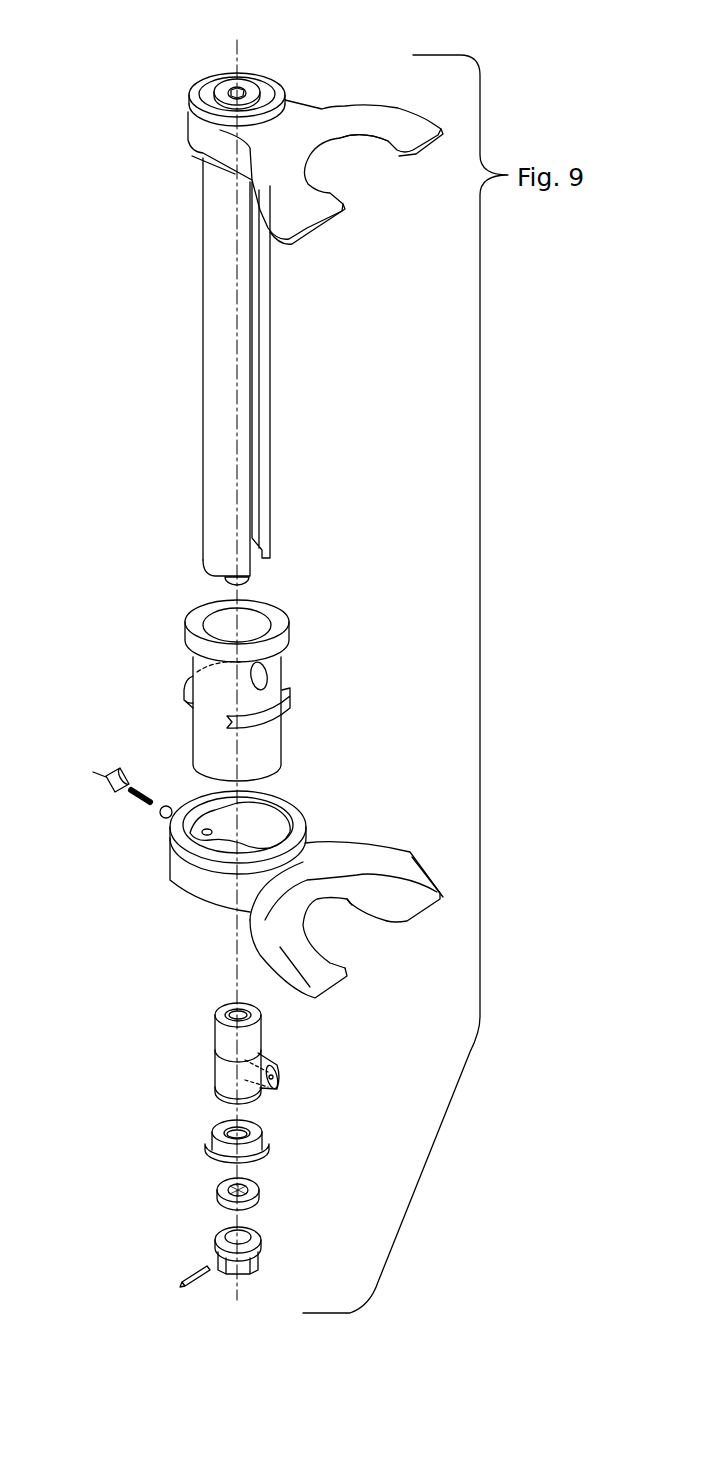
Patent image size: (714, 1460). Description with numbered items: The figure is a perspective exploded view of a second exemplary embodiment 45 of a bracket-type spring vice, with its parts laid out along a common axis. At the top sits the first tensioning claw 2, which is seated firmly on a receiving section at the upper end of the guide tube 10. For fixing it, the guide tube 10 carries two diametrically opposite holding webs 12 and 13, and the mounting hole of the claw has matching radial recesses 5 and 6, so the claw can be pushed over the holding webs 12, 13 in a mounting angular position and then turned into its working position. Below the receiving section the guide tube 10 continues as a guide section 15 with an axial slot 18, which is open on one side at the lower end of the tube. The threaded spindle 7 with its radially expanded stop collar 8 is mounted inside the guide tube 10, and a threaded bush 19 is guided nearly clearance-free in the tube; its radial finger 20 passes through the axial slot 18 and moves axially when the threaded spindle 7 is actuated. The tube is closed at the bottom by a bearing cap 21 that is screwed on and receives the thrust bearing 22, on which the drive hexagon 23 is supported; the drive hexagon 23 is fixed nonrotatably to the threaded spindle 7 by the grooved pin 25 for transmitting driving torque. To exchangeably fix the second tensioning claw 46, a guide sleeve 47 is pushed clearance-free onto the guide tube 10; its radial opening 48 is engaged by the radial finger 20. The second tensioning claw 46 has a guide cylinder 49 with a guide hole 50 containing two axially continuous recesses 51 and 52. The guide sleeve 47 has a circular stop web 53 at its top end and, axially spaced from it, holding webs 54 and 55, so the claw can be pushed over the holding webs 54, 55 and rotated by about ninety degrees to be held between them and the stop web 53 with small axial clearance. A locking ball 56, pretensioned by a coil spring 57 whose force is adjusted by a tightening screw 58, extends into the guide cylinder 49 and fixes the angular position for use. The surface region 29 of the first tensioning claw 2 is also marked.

The first tensioning claw 2 is at (285, 228).
The recess 5 is at (264, 77).
The recess 6 is at (200, 110).
The threaded spindle 7 is at (228, 581).
The stop collar 8 is at (222, 96).
The guide tube 10 is at (210, 313).
The holding web 12 is at (292, 92).
The holding web 13 is at (208, 83).
The guide section 15 is at (218, 442).
The axial slot 18 is at (262, 413).
The threaded bush 19 is at (222, 1040).
The radial finger 20 is at (270, 1063).
The bearing cap 21 is at (212, 1135).
The thrust bearing 22 is at (260, 1192).
The drive hexagon 23 is at (262, 1253).
The grooved pin 25 is at (183, 1278).
The fork recess 29 is at (323, 202).
The second exemplary embodiment of a spring vice 45 is at (160, 440).
The second tensioning claw 46 is at (328, 833).
The guide sleeve 47 is at (200, 734).
The radial opening 48 is at (266, 678).
The guide cylinder 49 is at (205, 885).
The guide hole 50 is at (233, 870).
The recess 51 is at (281, 804).
The recess 52 is at (193, 860).
The stop web 53 is at (283, 626).
The holding web 54 is at (290, 710).
The holding web 55 is at (185, 684).
The locking ball 56 is at (158, 815).
The coil spring 57 is at (140, 802).
The tightening screw 58 is at (108, 786).